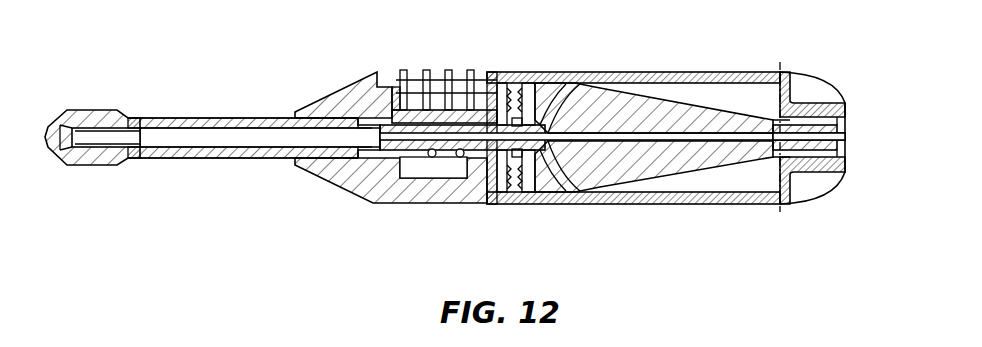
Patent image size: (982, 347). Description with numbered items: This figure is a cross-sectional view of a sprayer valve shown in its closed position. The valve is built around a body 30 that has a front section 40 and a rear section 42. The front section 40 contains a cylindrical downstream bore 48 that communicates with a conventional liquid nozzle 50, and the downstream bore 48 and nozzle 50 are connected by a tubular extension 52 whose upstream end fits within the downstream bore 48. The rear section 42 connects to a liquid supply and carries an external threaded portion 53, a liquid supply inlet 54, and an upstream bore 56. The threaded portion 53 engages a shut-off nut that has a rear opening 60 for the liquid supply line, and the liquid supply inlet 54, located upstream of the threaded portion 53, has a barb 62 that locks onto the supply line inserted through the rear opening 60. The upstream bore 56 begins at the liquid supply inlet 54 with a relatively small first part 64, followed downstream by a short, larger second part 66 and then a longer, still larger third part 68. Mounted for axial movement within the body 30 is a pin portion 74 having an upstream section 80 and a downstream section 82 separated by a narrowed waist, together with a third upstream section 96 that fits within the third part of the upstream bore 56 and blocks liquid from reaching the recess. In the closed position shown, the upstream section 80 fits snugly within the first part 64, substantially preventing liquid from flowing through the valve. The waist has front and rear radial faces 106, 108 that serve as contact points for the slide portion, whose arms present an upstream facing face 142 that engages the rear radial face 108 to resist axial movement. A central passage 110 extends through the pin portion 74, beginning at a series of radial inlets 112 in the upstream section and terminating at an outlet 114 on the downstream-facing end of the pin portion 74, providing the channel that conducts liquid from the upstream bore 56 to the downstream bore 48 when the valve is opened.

The body 30 is at (353, 212).
The front section 40 is at (330, 170).
The rear section 42 is at (538, 140).
The downstream bore 48 is at (372, 80).
The liquid nozzle 50 is at (89, 102).
The tubular extension 52 is at (220, 118).
The threaded portion 53 is at (526, 176).
The liquid supply inlet 54 is at (842, 142).
The upstream bore 56 is at (738, 112).
The rear opening 60 is at (847, 113).
The barb 62 is at (806, 118).
The first part of the upstream bore 64 is at (780, 127).
The second part of the upstream bore 66 is at (587, 98).
The third part of the upstream bore 68 is at (497, 100).
The pin portion 74 is at (502, 190).
The upstream section 80 is at (610, 98).
The downstream section 82 is at (553, 100).
The third upstream section 96 is at (477, 180).
The front radial face 106 is at (432, 160).
The rear radial face 108 is at (460, 160).
The central passage 110 is at (394, 88).
The radial inlets 112 is at (523, 160).
The outlet 114 is at (350, 130).
The upstream facing face 142 is at (474, 245).